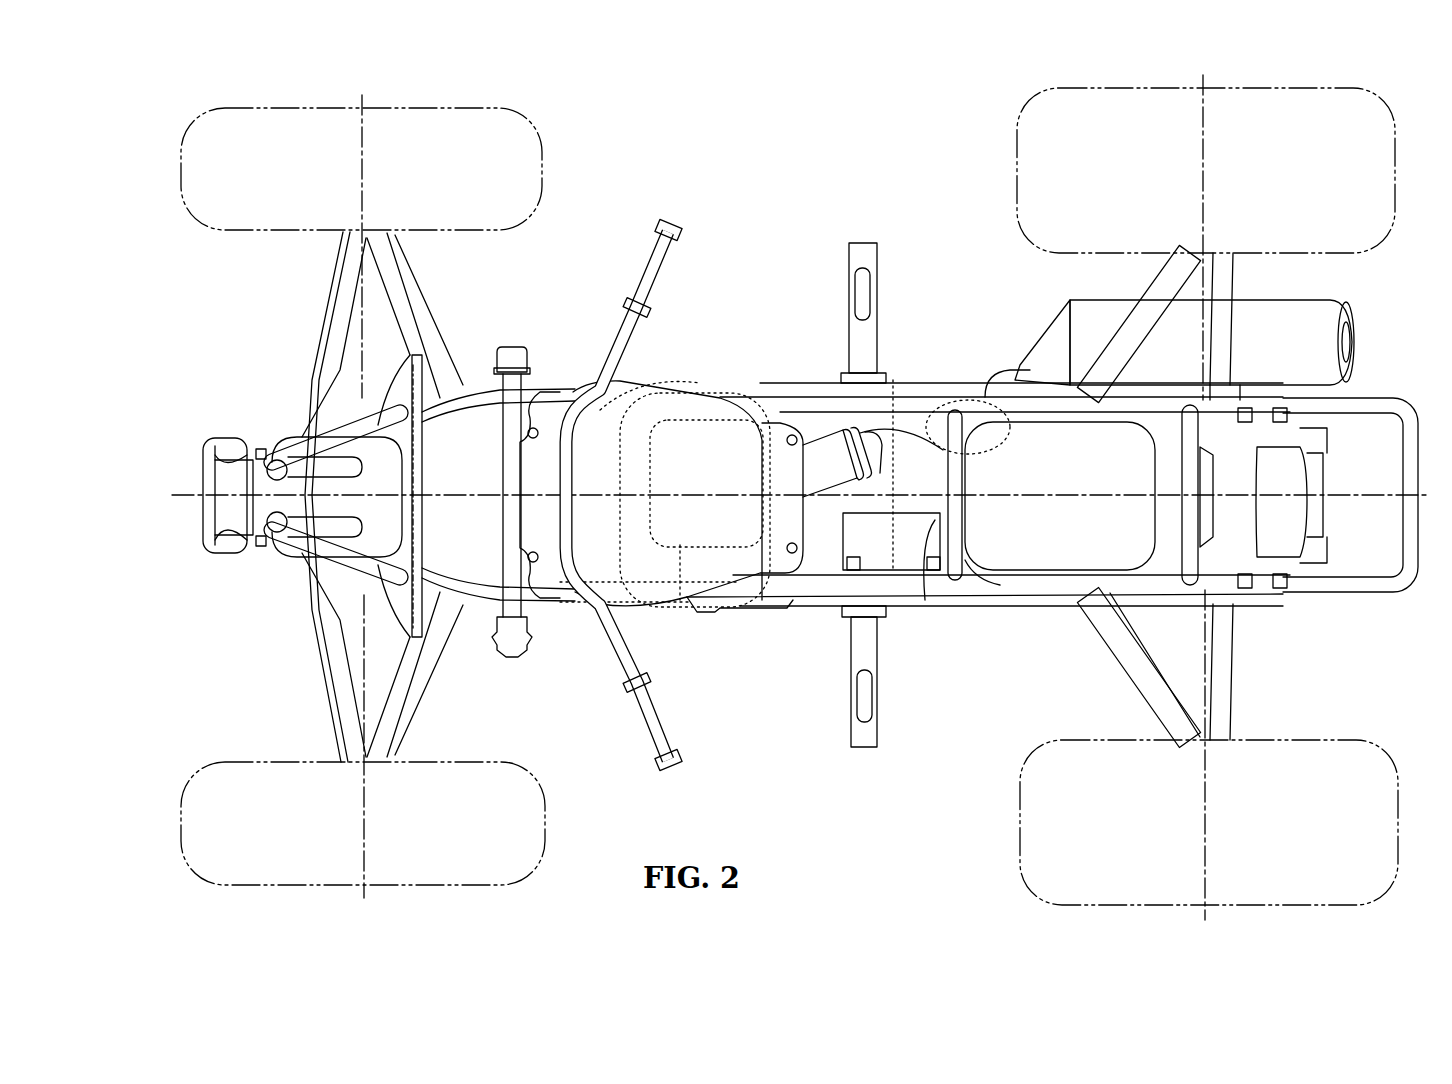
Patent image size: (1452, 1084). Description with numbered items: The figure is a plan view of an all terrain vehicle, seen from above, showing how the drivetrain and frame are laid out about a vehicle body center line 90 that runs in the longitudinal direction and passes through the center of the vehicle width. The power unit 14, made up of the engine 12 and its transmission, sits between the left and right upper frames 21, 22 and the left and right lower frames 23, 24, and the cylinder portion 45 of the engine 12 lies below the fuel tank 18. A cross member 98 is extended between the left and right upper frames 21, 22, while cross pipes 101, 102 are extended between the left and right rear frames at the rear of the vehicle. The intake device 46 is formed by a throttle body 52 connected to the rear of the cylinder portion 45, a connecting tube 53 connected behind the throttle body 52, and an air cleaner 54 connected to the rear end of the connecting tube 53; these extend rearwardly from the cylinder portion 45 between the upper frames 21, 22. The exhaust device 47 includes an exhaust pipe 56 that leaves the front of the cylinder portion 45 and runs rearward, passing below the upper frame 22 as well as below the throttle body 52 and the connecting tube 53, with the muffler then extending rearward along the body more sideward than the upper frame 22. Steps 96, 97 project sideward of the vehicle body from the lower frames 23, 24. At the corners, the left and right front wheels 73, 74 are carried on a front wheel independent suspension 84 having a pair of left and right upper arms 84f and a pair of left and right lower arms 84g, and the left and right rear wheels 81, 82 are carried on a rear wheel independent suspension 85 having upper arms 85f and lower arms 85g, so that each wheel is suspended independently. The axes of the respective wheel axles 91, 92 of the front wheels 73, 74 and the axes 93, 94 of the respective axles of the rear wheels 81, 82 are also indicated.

The engine 12 is at (718, 455).
The power unit 14 is at (731, 618).
The fuel tank 18 is at (583, 384).
The upper frame 21 is at (545, 600).
The upper frame 22 is at (540, 385).
The lower frame 23 is at (980, 607).
The lower frame 24 is at (957, 385).
The cylinder portion 45 is at (765, 445).
The intake device 46 is at (905, 420).
The exhaust device 47 is at (1020, 335).
The throttle body 52 is at (822, 480).
The connecting tube 53 is at (928, 575).
The air cleaner 54 is at (1073, 560).
The exhaust pipe 56 is at (620, 420).
The front wheel 73 is at (200, 760).
The front wheel 74 is at (192, 235).
The rear wheel 81 is at (1018, 830).
The rear wheel 82 is at (1013, 150).
The front wheel independent suspension 84 is at (415, 441).
The upper arm 84f is at (313, 428).
The lower arm 84g is at (312, 380).
The rear wheel independent suspension 85 is at (1133, 408).
The upper arm 85f is at (1152, 257).
The lower arm 85g is at (1348, 340).
The vehicle body center line 90 is at (175, 495).
The axis of wheel axle 91 is at (368, 636).
The axis of wheel axle 92 is at (365, 345).
The axis of axle 93 is at (1205, 800).
The axis of axle 94 is at (1203, 221).
The step 96 is at (860, 750).
The step 97 is at (858, 250).
The cross member 98 is at (416, 362).
The cross pipe 101 is at (1013, 570).
The cross pipe 102 is at (1181, 583).